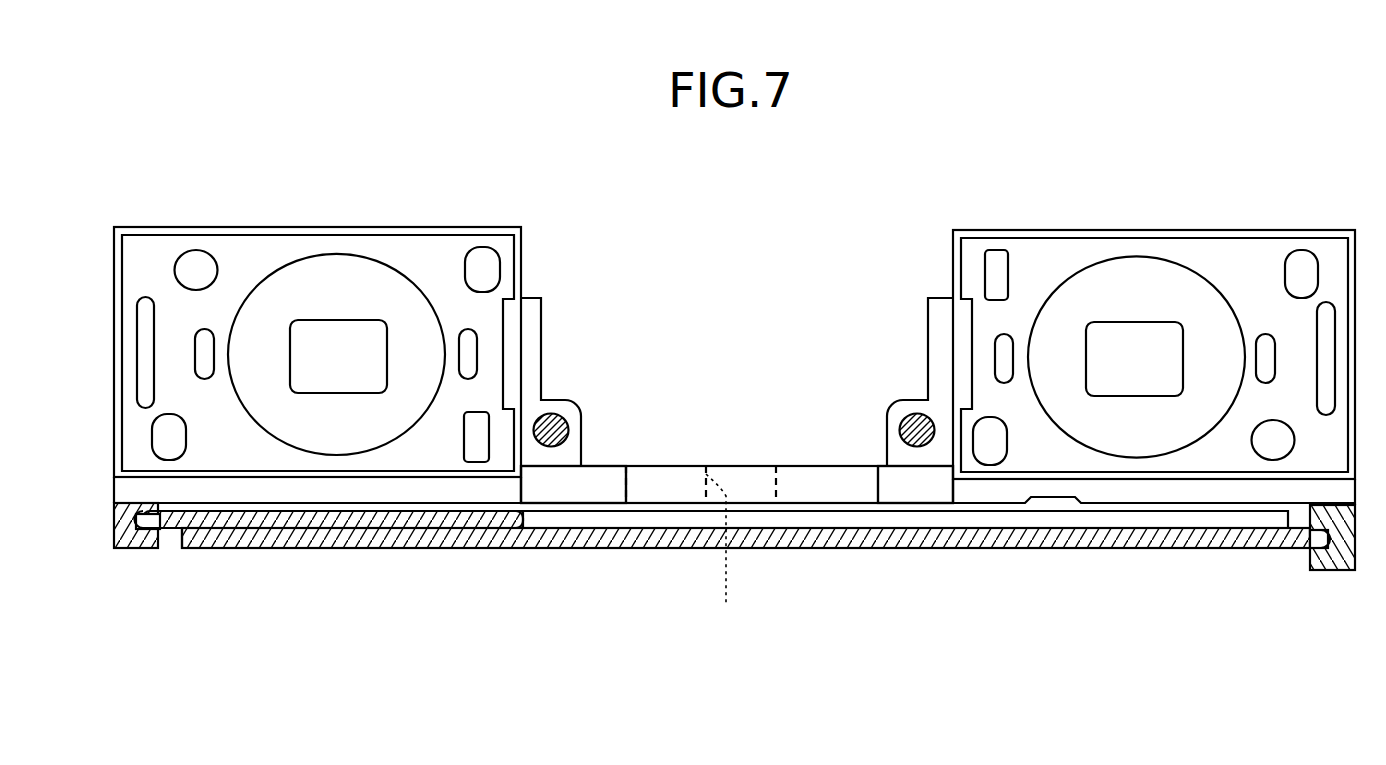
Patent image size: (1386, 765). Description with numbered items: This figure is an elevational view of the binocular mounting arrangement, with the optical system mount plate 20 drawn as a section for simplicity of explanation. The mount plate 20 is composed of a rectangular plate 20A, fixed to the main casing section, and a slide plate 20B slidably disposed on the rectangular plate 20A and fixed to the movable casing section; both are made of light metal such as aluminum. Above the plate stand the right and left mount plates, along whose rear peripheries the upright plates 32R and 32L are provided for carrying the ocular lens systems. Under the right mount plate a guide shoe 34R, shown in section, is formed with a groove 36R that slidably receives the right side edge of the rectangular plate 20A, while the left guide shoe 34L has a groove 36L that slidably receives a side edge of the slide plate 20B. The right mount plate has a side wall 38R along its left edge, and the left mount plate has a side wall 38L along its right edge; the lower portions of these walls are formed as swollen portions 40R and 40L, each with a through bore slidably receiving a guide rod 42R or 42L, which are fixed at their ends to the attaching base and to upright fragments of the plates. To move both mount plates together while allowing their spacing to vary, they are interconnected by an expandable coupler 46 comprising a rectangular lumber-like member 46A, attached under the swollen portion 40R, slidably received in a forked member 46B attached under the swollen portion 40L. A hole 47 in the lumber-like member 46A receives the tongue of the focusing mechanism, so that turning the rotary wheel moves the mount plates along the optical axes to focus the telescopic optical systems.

The optical system mount plate 20 is at (736, 578).
The rectangular plate 20A is at (327, 538).
The slide plate 20B is at (1057, 521).
The upright plate 32L is at (355, 227).
The upright plate 32R is at (1152, 230).
The guide shoe 34L is at (128, 549).
The guide shoe 34R is at (1323, 571).
The groove 36L is at (172, 530).
The groove 36R is at (1307, 550).
The side wall 38L is at (528, 259).
The side wall 38R is at (918, 327).
The swollen portion 40L is at (572, 452).
The swollen portion 40R is at (895, 450).
The guide rod 42L is at (565, 414).
The guide rod 42R is at (908, 414).
The expandable coupler 46 is at (700, 460).
The lumber-like member 46A is at (917, 486).
The forked member 46B is at (578, 486).
The hole 47 is at (726, 559).